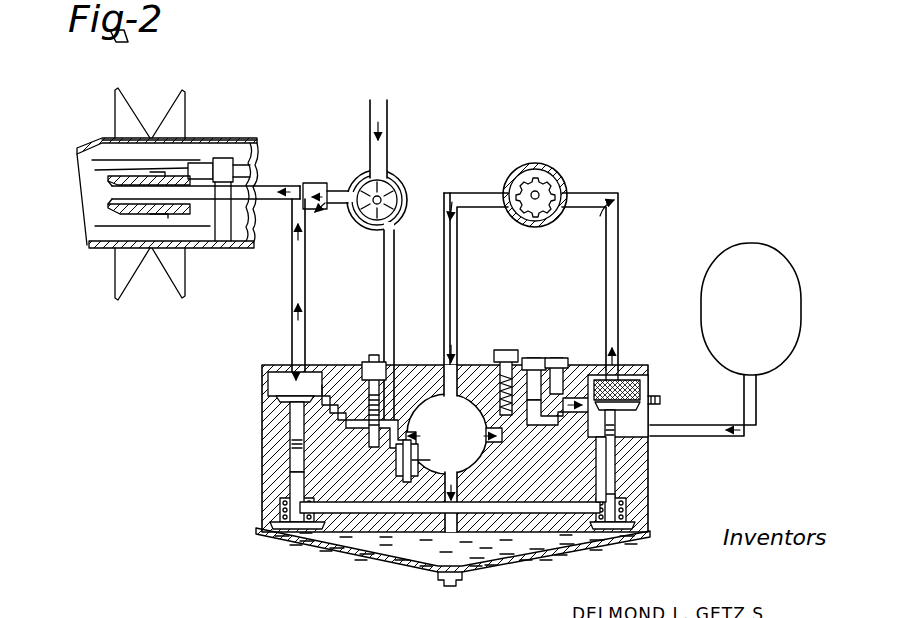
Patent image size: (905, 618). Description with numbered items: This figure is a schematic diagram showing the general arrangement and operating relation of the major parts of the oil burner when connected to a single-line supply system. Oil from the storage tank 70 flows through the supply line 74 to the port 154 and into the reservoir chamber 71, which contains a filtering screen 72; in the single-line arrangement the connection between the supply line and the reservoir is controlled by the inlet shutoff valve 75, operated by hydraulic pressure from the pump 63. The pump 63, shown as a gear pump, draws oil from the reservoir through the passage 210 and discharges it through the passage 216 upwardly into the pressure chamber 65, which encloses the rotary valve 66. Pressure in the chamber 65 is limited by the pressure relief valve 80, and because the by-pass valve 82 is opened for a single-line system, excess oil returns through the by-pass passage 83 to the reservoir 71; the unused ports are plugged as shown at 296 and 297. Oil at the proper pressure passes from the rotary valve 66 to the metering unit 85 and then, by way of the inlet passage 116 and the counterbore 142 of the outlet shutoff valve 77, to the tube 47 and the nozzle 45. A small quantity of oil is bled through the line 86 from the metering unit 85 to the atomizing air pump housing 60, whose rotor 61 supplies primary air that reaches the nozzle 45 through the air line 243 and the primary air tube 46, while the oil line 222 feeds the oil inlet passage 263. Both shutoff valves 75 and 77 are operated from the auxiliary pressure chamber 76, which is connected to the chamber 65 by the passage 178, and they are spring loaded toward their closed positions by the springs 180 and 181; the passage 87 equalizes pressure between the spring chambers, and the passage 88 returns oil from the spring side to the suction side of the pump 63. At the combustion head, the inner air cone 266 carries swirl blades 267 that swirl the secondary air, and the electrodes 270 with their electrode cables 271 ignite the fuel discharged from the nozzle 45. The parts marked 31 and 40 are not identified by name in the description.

The housing (partial) 31 is at (428, 0).
The oil inlet passage 263 is at (590, 5).
The electrodes 270 is at (80, 152).
The swirl blades 267 is at (172, 112).
The inner air cone 266 is at (222, 138).
The electrode cables 271 is at (262, 158).
The nozzle 45 is at (110, 205).
The primary air tube 46 is at (278, 184).
The tube 47 is at (268, 222).
The air line 243 is at (340, 190).
The oil line 222 is at (292, 290).
The atomizing air pump housing 60 is at (391, 176).
The rotor 61 is at (399, 196).
The line 86 is at (384, 302).
The passage 216 is at (456, 262).
The passage 210 is at (610, 237).
The suction and pressure pump 63 is at (520, 170).
The storage tank 70 is at (774, 356).
The supply line 74 is at (712, 438).
The valve body 40 is at (255, 438).
The auxiliary pressure chamber 76 is at (350, 545).
The passage 178 is at (445, 555).
The counterbore 142 is at (278, 372).
The outlet shutoff valve 77 is at (272, 382).
The spring 181 is at (280, 506).
The metering unit 85 is at (366, 450).
The inlet passage 116 is at (322, 396).
The pressure chamber 65 is at (454, 448).
The rotary valve 66 is at (408, 458).
The pressure relief valve 80 is at (496, 356).
The plug 296 is at (530, 364).
The by-pass valve 82 is at (554, 358).
The by-pass passage 83 is at (572, 392).
The filtering screen 72 is at (634, 376).
The reservoir chamber 71 is at (618, 372).
The plug 297 is at (668, 402).
The inlet shutoff valve 75 is at (646, 412).
The port 154 is at (648, 438).
The spring 180 is at (640, 500).
The passage 87 is at (516, 514).
The passage 88 is at (578, 514).